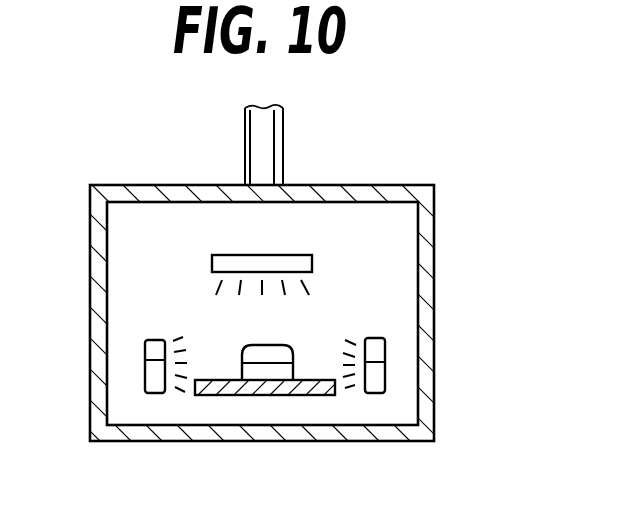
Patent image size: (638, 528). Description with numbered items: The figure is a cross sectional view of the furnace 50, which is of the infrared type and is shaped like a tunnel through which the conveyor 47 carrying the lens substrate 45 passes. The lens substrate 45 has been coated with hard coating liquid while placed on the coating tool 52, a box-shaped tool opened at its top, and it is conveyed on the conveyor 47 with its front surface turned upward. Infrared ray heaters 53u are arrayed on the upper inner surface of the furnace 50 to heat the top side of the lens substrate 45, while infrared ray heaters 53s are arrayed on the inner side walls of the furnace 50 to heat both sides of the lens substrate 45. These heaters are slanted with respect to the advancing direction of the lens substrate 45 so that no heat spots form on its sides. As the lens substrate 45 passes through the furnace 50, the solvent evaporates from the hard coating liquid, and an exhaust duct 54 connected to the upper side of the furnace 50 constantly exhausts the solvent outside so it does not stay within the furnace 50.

The furnace 50 is at (434, 383).
The exhaust duct 54 is at (285, 118).
The infrared ray heaters 53u is at (233, 258).
The infrared ray heaters 53s is at (157, 343).
The conveyor 47 is at (210, 397).
The lens substrate 45 is at (265, 352).
The coating tool 52 is at (273, 377).